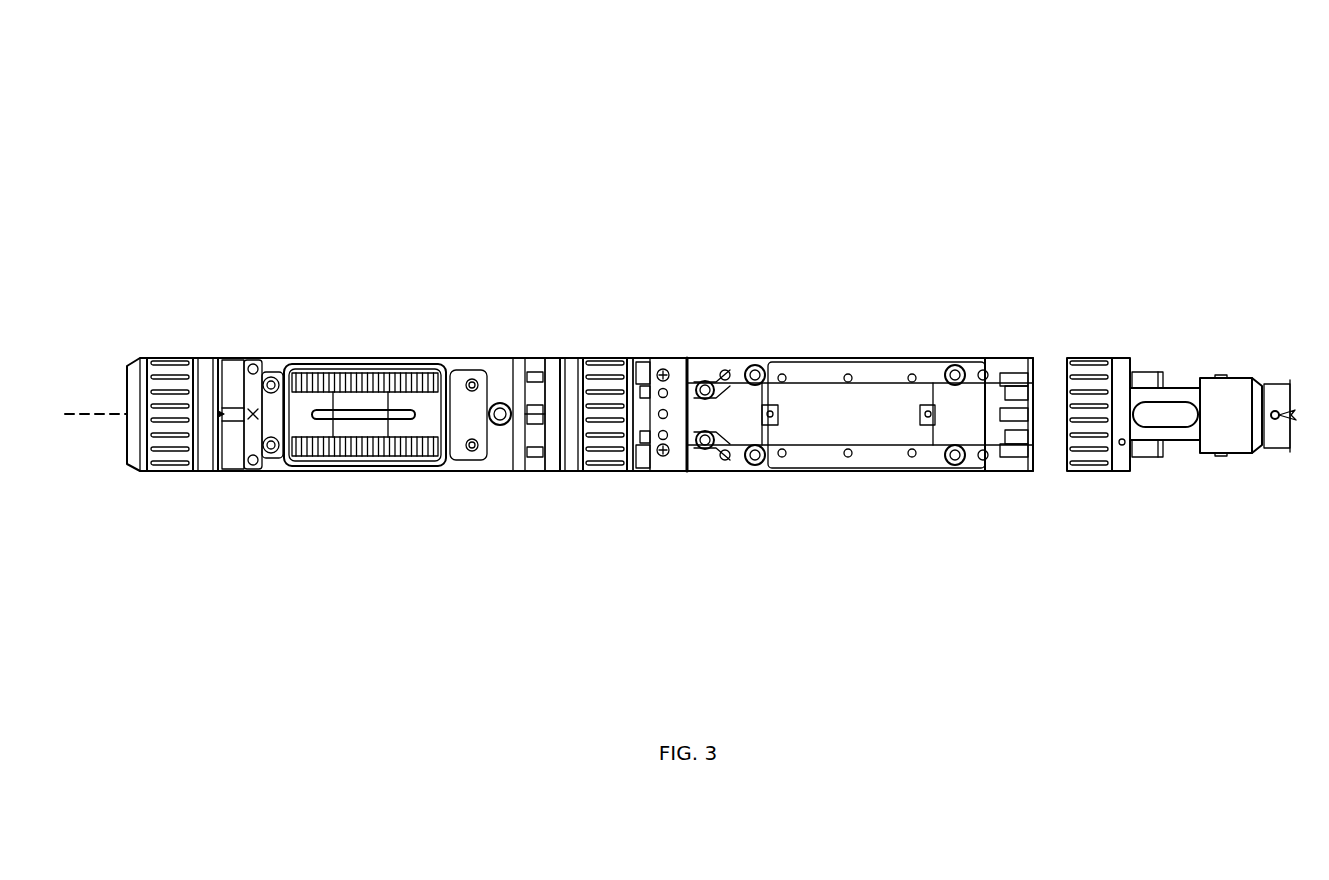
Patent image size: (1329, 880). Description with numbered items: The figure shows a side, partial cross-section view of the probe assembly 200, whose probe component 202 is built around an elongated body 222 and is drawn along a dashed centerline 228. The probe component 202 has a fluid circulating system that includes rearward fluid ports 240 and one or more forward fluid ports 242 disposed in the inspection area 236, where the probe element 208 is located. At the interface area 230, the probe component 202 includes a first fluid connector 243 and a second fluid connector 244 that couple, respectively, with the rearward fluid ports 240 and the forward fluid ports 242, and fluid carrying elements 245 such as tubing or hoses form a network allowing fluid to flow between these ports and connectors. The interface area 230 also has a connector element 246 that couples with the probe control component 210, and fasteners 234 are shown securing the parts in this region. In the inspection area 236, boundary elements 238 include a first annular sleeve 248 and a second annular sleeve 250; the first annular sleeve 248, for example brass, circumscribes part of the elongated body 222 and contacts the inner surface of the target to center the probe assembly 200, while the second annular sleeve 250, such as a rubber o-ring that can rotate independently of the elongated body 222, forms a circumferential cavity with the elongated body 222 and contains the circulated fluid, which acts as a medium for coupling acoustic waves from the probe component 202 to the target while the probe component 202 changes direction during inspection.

The probe assembly 200 is at (1112, 283).
The probe component 202 is at (96, 366).
The probe element 208 is at (378, 468).
The probe control component 210 is at (627, 472).
The elongated body 222 is at (126, 604).
The longitudinal axis 228 is at (78, 418).
The interface area 230 is at (717, 536).
The fasteners 234 is at (768, 358).
The inspection area 236 is at (245, 538).
The boundary elements 238 is at (232, 336).
The rearward fluid ports 240 is at (519, 472).
The forward fluid ports 242 is at (252, 466).
The first fluid connector 243 is at (708, 446).
The second fluid connector 244 is at (708, 384).
The fluid carrying elements 245 is at (672, 358).
The connector element 246 is at (862, 410).
The first annular sleeve 248 is at (163, 473).
The second annular sleeve 250 is at (221, 358).